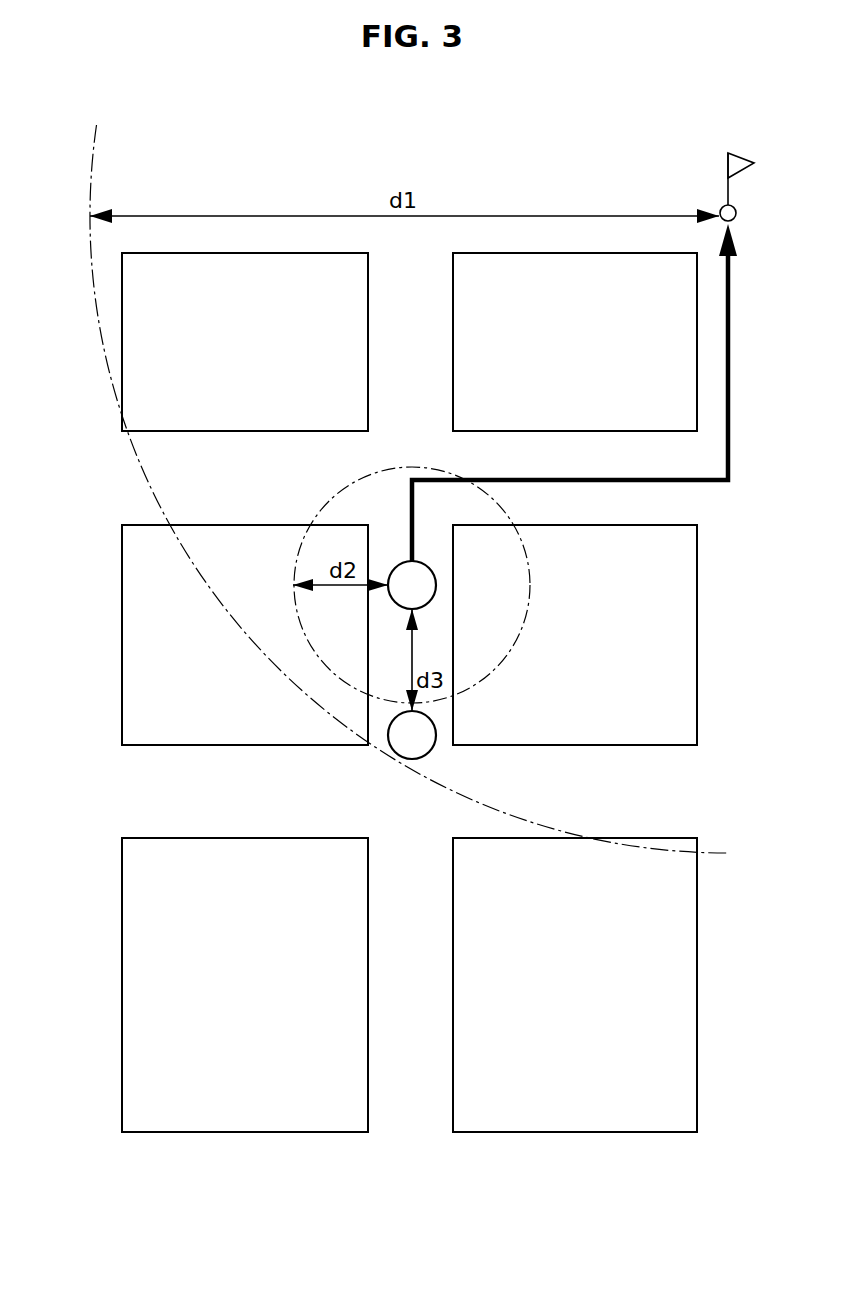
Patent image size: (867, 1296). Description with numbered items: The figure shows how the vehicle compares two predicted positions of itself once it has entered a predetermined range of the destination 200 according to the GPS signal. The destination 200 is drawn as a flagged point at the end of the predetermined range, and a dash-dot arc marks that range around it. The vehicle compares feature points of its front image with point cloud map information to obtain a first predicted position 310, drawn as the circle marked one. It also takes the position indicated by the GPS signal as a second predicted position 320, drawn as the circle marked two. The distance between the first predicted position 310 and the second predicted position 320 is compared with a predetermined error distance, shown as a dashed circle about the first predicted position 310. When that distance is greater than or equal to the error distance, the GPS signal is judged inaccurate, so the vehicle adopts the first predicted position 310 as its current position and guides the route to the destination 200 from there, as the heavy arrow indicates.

The destination 200 is at (723, 207).
The first predicted position 310 is at (436, 580).
The second predicted position 320 is at (436, 731).